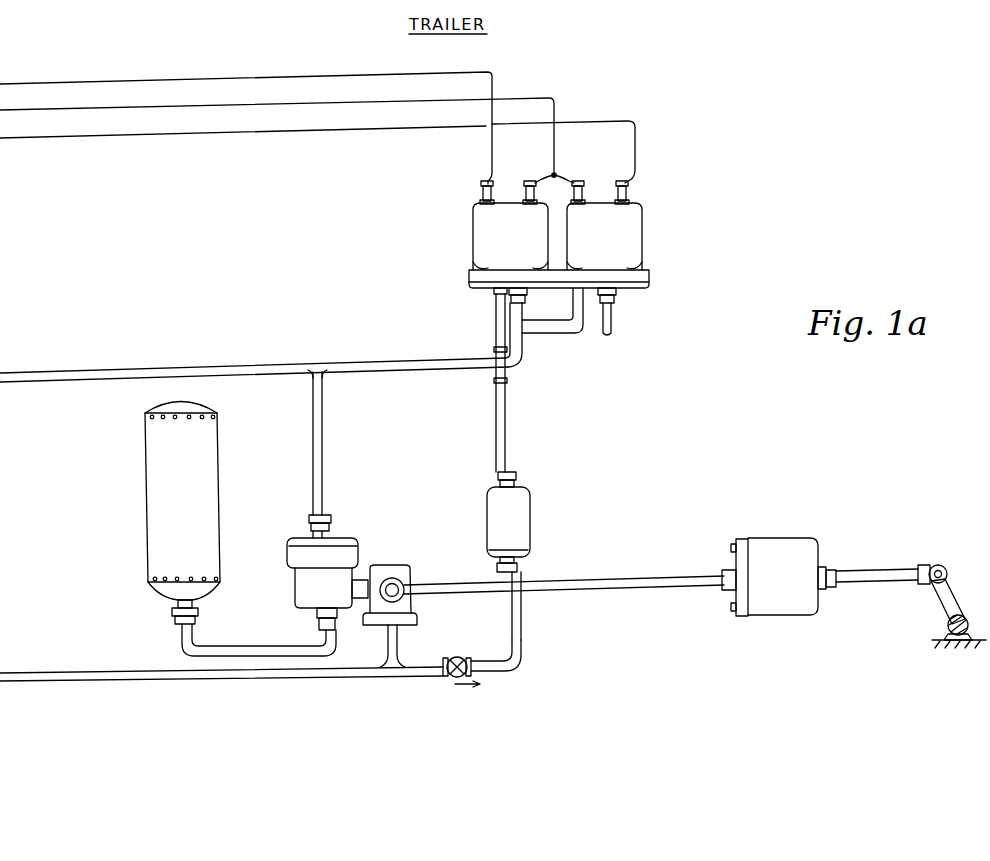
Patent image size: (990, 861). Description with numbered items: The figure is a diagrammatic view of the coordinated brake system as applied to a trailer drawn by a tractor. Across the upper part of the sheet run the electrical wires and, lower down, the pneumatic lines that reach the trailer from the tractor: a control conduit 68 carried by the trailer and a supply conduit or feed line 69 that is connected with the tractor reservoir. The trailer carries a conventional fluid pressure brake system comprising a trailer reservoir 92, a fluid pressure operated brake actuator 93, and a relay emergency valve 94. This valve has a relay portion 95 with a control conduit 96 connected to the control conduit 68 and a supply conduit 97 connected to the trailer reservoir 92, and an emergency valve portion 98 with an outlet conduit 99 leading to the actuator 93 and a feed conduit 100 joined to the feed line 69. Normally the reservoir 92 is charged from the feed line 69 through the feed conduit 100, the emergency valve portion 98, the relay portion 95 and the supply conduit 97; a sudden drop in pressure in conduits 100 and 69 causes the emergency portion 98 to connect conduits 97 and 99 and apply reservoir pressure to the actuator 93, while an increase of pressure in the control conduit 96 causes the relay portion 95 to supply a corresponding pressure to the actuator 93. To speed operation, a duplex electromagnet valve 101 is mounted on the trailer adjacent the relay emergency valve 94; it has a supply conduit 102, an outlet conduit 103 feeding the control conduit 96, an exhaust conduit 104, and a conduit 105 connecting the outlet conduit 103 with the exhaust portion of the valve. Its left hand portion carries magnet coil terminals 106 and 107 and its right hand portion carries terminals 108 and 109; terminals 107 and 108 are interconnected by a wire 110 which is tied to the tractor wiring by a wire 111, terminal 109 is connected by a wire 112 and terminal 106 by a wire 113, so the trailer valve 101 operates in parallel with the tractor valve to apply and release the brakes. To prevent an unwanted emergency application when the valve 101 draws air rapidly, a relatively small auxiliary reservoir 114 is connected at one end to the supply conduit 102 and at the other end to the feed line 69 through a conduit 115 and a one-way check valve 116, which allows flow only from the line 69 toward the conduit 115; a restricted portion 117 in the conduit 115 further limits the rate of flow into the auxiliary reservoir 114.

The control conduit 68 is at (136, 372).
The supply conduit or feed line 69 is at (138, 678).
The trailer reservoir 92 is at (153, 497).
The fluid pressure operated brake actuator 93 is at (797, 545).
The relay emergency valve 94 is at (367, 540).
The relay portion 95 is at (288, 546).
The control conduit 96 is at (324, 458).
The supply conduit 97 is at (250, 647).
The emergency valve portion 98 is at (403, 567).
The outlet conduit 99 is at (665, 580).
The feed conduit 100 is at (398, 642).
The duplex electromagnet valve 101 is at (683, 216).
The supply conduit 102 is at (507, 416).
The outlet conduit 103 is at (524, 356).
The exhaust conduit 104 is at (613, 318).
The conduit 105 is at (568, 334).
The magnet coil terminal 106 is at (481, 188).
The magnet coil terminal 107 is at (531, 180).
The terminal 108 is at (590, 170).
The terminal 109 is at (630, 188).
The wire 110 is at (557, 172).
The wire 111 is at (568, 92).
The wire 112 is at (636, 130).
The wire 113 is at (495, 74).
The auxiliary reservoir 114 is at (531, 519).
The conduit 115 is at (523, 622).
The one-way check valve 116 is at (452, 680).
The restricted portion 117 is at (522, 646).